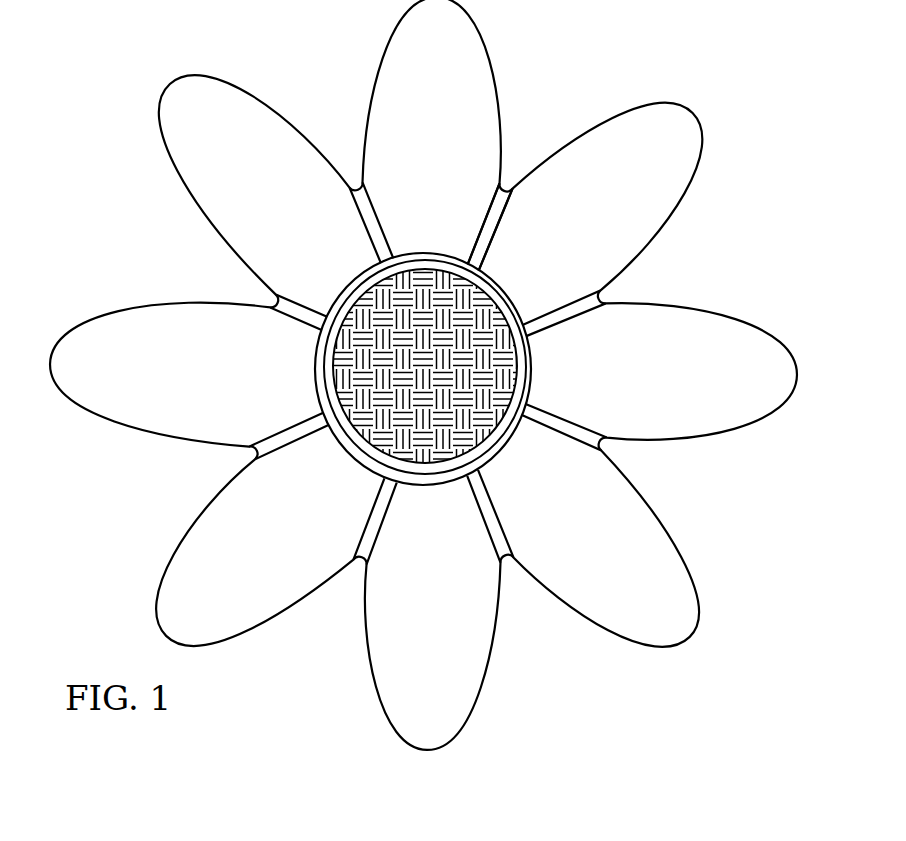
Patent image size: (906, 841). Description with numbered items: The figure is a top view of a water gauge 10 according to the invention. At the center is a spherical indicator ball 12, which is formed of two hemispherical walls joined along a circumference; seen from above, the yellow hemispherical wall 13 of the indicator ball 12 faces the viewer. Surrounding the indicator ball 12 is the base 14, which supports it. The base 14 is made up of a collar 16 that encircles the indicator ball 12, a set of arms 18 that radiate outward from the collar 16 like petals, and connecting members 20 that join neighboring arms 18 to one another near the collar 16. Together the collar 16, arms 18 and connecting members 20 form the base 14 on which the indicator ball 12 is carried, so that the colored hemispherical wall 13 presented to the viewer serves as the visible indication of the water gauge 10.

The water gauge 10 is at (753, 197).
The spherical indicator ball 12 is at (488, 437).
The yellow hemispherical wall 13 is at (337, 370).
The base 14 is at (747, 318).
The collar 16 is at (340, 293).
The arms 18 is at (367, 103).
The connecting members 20 is at (503, 183).